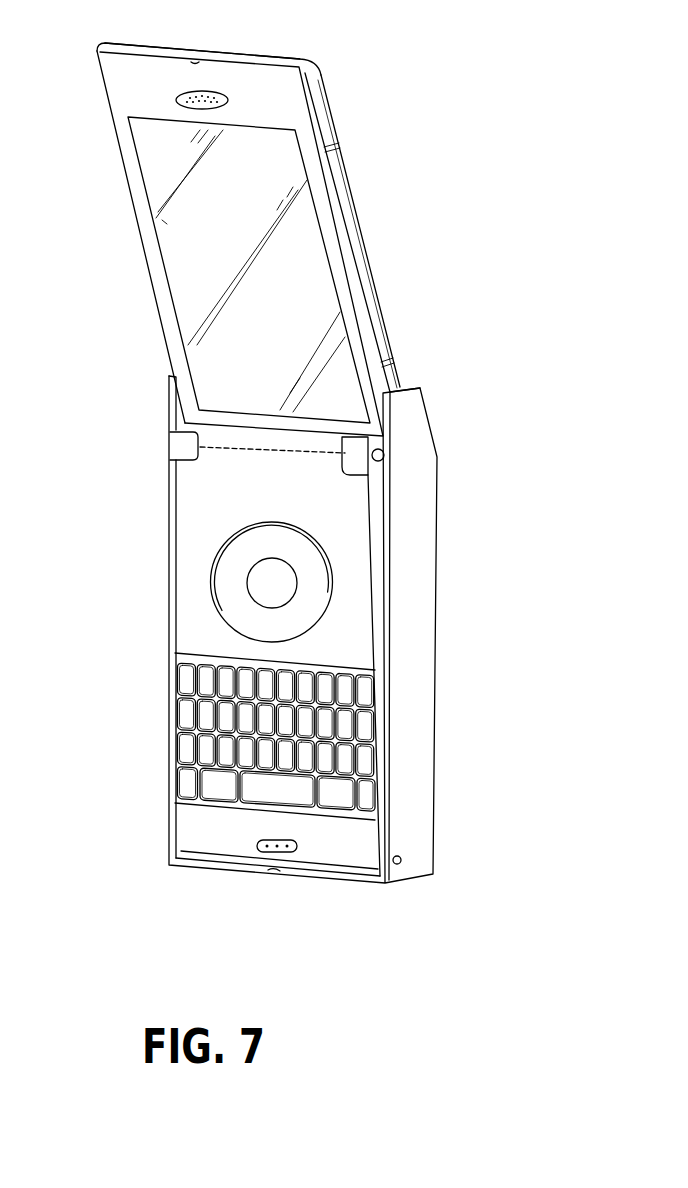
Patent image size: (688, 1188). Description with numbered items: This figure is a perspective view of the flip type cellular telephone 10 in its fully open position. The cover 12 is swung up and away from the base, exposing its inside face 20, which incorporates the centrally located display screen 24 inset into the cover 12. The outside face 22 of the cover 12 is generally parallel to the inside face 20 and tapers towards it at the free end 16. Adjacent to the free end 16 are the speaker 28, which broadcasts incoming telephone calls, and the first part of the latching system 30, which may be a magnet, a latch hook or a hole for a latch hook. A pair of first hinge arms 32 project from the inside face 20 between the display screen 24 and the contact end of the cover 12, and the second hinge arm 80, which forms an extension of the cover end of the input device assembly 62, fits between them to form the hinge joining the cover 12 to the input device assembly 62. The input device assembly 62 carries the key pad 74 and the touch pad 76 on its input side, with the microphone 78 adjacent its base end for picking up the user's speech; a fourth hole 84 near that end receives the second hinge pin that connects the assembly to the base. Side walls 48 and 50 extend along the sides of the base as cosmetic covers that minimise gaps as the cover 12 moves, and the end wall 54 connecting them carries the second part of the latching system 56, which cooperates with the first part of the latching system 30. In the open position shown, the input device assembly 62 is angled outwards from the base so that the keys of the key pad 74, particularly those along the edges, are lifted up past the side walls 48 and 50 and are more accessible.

The cellular telephone 10 is at (487, 178).
The cover 12 is at (323, 118).
The free end 16 is at (267, 53).
The inside face 20 is at (357, 250).
The outside face 22 is at (350, 182).
The display screen 24 is at (177, 247).
The speaker 28 is at (176, 101).
The first part of latching system 30 is at (195, 60).
The first hinge arms 32 is at (175, 447).
The side wall 48 is at (170, 817).
The side wall 50 is at (407, 830).
The end wall 54 is at (187, 867).
The second part of latching system 56 is at (273, 870).
The input device assembly 62 is at (193, 533).
The key pad 74 is at (177, 740).
The touch pad 76 is at (317, 547).
The microphone 78 is at (257, 842).
The second hinge arm 80 is at (236, 447).
The fourth hole 84 is at (400, 863).